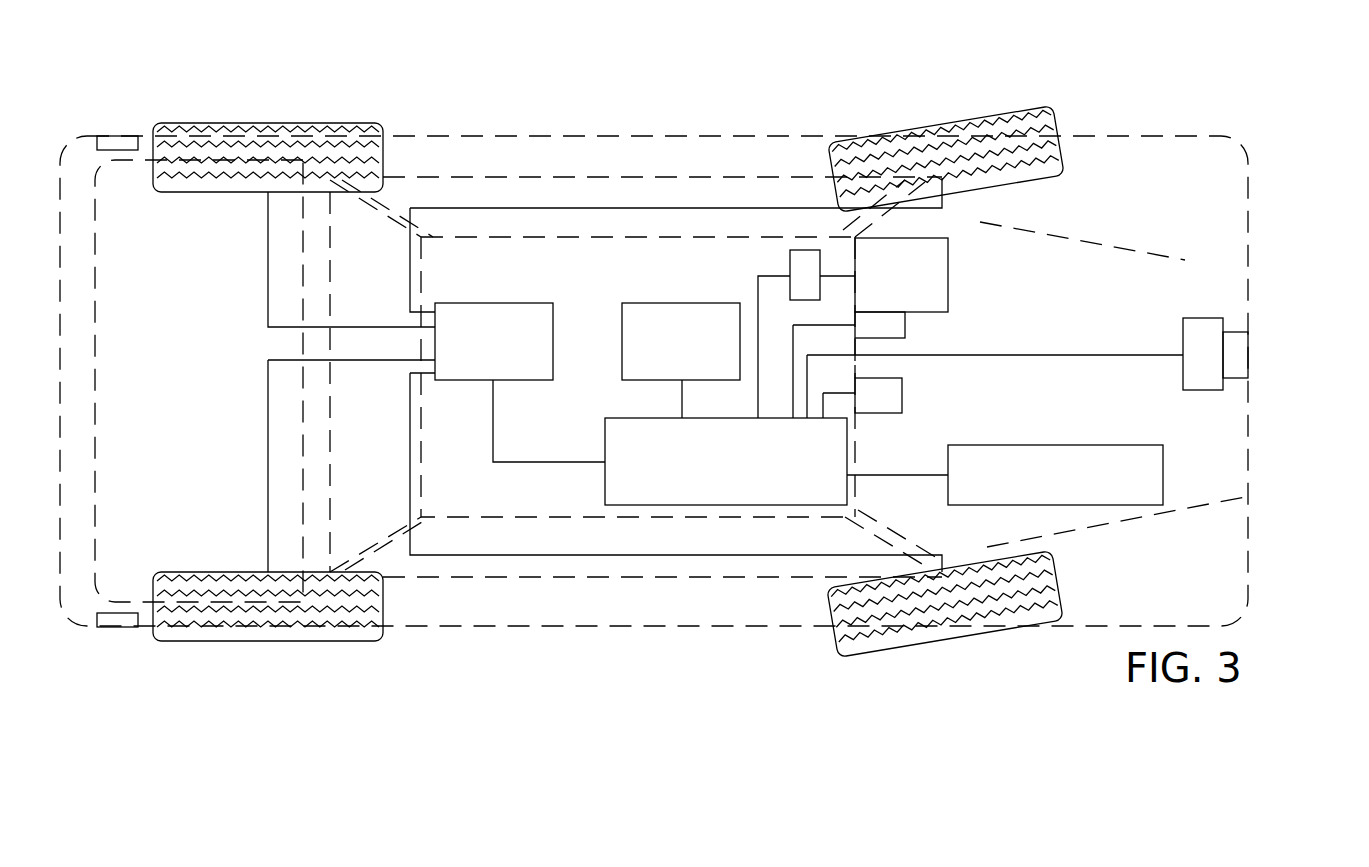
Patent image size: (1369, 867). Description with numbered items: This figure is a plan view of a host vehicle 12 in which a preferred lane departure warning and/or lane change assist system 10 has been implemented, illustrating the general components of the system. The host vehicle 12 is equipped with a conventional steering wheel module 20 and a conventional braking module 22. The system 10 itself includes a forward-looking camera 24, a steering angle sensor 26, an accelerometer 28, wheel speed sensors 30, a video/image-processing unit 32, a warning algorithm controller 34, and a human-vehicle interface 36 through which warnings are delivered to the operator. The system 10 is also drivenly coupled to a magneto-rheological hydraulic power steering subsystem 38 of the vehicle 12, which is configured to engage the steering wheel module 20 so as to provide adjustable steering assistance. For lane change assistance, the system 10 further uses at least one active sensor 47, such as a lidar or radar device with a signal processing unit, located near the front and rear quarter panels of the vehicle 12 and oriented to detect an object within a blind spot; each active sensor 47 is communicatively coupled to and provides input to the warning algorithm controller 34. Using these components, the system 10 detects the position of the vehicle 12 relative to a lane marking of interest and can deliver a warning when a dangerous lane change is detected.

The lane departure warning and/or lane change assist system 10 is at (1310, 488).
The host vehicle 12 is at (671, 135).
The steering wheel module 20 is at (948, 273).
The braking module 22 is at (682, 303).
The forward-looking camera 24 is at (1247, 331).
The steering angle sensor 26 is at (905, 332).
The accelerometer 28 is at (1165, 483).
The wheel speed sensors 30 is at (553, 303).
The video/image-processing unit 32 is at (1210, 318).
The warning algorithm controller 34 is at (605, 505).
The human-vehicle interface 36 is at (902, 393).
The magneto-rheological hydraulic power steering subsystem 38 is at (793, 250).
The active sensor 47 is at (121, 137).